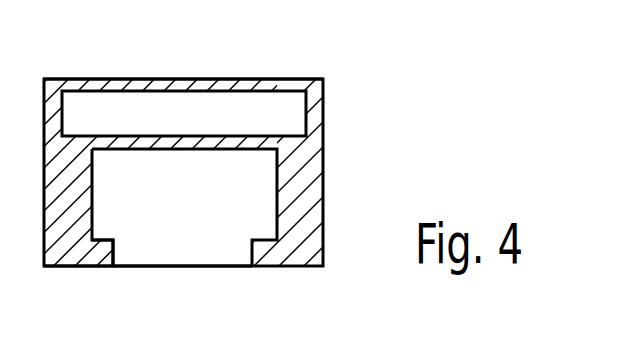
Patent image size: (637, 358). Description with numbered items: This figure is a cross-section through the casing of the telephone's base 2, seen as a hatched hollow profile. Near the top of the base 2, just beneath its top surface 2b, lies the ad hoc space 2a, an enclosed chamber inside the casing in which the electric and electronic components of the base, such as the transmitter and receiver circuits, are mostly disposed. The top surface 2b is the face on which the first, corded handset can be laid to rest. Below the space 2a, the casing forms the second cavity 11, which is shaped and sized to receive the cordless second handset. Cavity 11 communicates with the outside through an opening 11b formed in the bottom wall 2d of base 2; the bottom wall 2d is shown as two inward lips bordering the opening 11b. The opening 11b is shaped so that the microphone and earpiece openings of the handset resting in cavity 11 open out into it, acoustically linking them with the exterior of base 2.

The base 2 is at (303, 180).
The space 2a is at (178, 118).
The top surface 2b is at (294, 79).
The bottom wall 2d is at (80, 266).
The second cavity 11 is at (239, 207).
The opening 11b is at (158, 255).